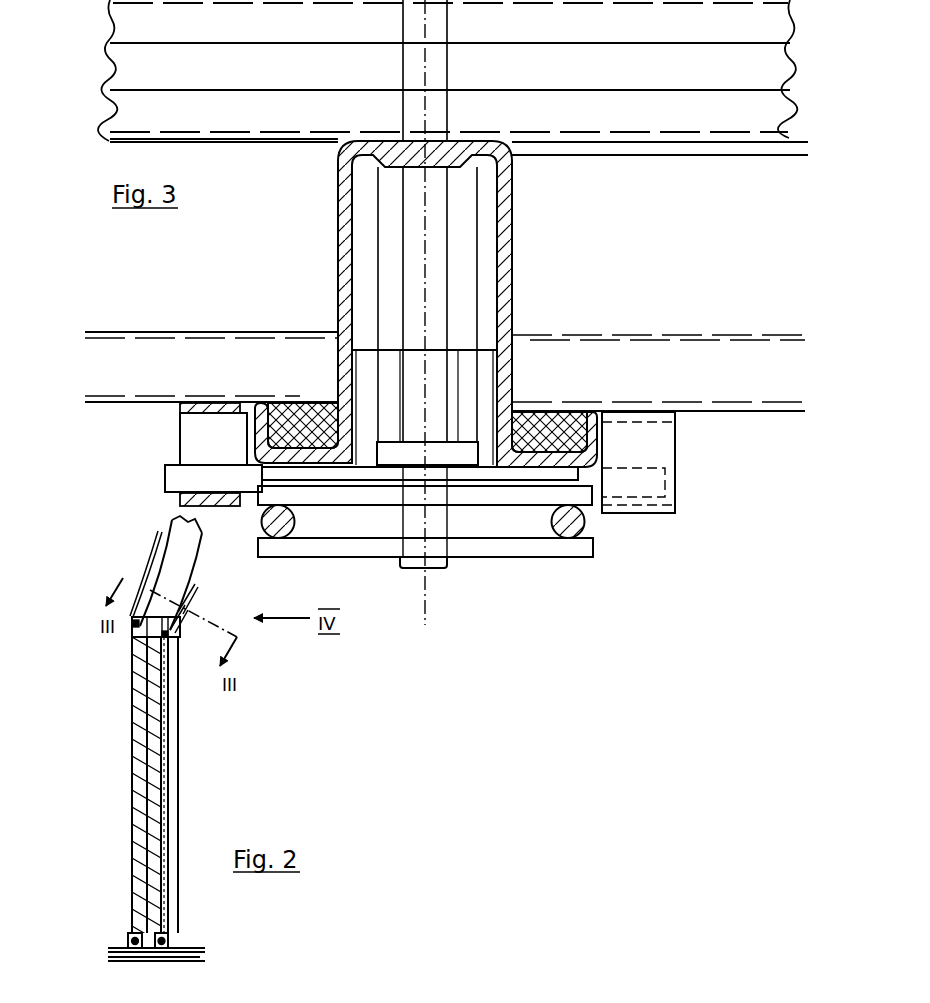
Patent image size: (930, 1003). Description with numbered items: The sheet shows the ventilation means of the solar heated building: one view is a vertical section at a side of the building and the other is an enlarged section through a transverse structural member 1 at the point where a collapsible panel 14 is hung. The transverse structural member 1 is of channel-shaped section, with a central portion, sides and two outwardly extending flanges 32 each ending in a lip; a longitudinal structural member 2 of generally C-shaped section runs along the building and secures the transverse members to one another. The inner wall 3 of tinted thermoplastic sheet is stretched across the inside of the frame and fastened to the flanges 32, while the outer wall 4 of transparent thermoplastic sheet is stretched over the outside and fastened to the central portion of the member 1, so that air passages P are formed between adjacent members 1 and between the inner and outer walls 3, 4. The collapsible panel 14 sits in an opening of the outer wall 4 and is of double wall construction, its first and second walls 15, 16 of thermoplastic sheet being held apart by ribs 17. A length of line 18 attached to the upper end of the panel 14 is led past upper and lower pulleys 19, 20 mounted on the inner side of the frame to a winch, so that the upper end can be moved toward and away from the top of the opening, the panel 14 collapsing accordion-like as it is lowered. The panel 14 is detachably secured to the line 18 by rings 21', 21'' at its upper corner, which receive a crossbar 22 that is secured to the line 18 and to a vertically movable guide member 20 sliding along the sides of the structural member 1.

In FIG. 3, the transverse structural member 1 is at (502, 240).
In FIG. 3, the longitudinal structural member 2 is at (676, 117).
In FIG. 2, the inner wall 3 is at (190, 565).
In FIG. 2, the outer wall 4 is at (148, 570).
In FIG. 2, the collapsible panel 14 is at (158, 789).
In FIG. 2, the first wall 15 is at (163, 758).
In FIG. 2, the second wall 16 is at (132, 763).
In FIG. 2, the rib 17 is at (158, 724).
In FIG. 3, the line 18 is at (587, 522).
In FIG. 2, the line 18 is at (193, 588).
In FIG. 3, the upper pulley 19 is at (517, 525).
In FIG. 2, the upper pulley 19 is at (190, 612).
In FIG. 3, the guide member 20 is at (500, 377).
In FIG. 3, the ring 21' is at (670, 462).
In FIG. 3, the ring 21'' is at (183, 454).
In FIG. 3, the crossbar 22 is at (167, 477).
In FIG. 3, the flange 32 is at (230, 402).
In FIG. 3, the passage P is at (175, 262).
In FIG. 2, the passage P is at (170, 520).